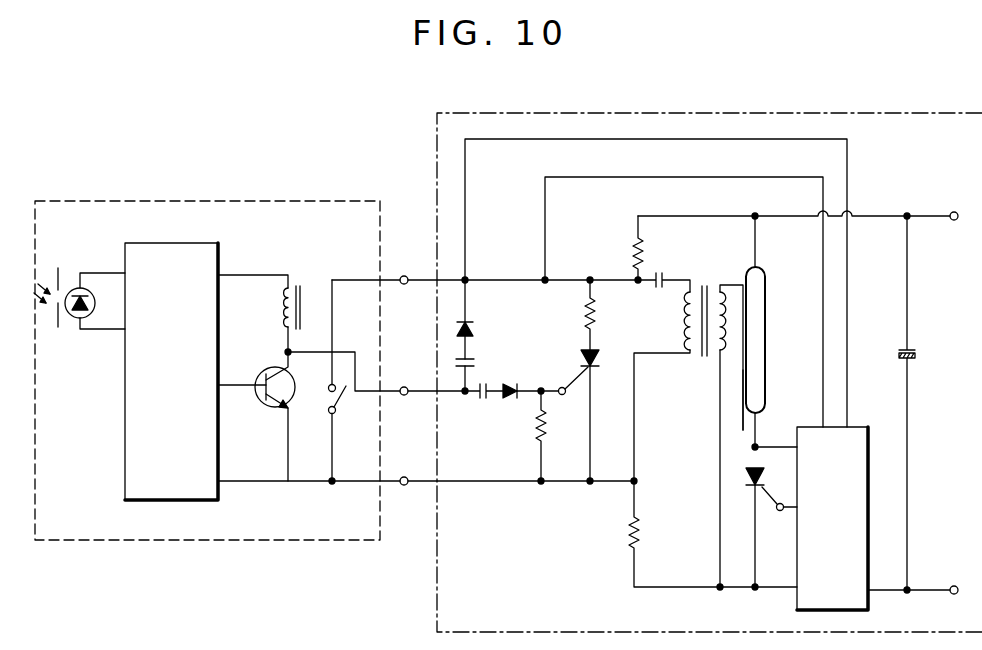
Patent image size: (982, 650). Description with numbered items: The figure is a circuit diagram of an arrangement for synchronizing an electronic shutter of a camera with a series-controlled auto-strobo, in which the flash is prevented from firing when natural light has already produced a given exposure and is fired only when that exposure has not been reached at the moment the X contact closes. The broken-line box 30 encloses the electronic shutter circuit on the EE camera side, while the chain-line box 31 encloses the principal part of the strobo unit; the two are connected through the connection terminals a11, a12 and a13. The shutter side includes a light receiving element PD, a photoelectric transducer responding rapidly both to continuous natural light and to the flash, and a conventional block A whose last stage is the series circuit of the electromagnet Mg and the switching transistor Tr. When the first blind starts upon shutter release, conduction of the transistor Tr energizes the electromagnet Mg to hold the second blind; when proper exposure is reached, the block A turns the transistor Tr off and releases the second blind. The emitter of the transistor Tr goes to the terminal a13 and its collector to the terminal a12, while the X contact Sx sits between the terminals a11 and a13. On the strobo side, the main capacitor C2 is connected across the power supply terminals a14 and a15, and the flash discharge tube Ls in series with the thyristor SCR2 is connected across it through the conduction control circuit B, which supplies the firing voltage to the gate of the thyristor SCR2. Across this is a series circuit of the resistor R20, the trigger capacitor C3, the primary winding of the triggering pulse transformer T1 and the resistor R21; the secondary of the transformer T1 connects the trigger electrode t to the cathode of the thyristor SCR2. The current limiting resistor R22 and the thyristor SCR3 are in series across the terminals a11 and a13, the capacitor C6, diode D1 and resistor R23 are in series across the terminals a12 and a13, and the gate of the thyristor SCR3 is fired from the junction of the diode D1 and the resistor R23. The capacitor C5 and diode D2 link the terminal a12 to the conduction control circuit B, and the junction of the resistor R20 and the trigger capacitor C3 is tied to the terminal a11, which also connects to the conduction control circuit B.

The box 30 is at (259, 201).
The box 31 is at (751, 113).
The light receiving element PD is at (72, 320).
The block A is at (171, 371).
The electromagnet Mg is at (290, 290).
The switching transistor Tr is at (264, 402).
The X contact Sx is at (330, 400).
The connection terminal a11 is at (403, 285).
The connection terminal a12 is at (403, 396).
The connection terminal a13 is at (403, 486).
The power supply terminal a14 is at (955, 211).
The power supply terminal a15 is at (955, 595).
The diode D1 is at (510, 402).
The diode D2 is at (470, 332).
The main capacitor C2 is at (918, 355).
The trigger capacitor C3 is at (657, 284).
The capacitor C5 is at (476, 364).
The capacitor C6 is at (482, 402).
The resistor R20 is at (636, 248).
The resistor R21 is at (638, 528).
The current limiting resistor R22 is at (596, 313).
The resistor R23 is at (546, 428).
The thyristor SCR2 is at (746, 483).
The thyristor SCR3 is at (601, 364).
The triggering pulse transformer T1 is at (694, 285).
The flash discharge tube Ls is at (768, 297).
The trigger electrode t is at (742, 362).
The conduction control circuit B is at (832, 518).